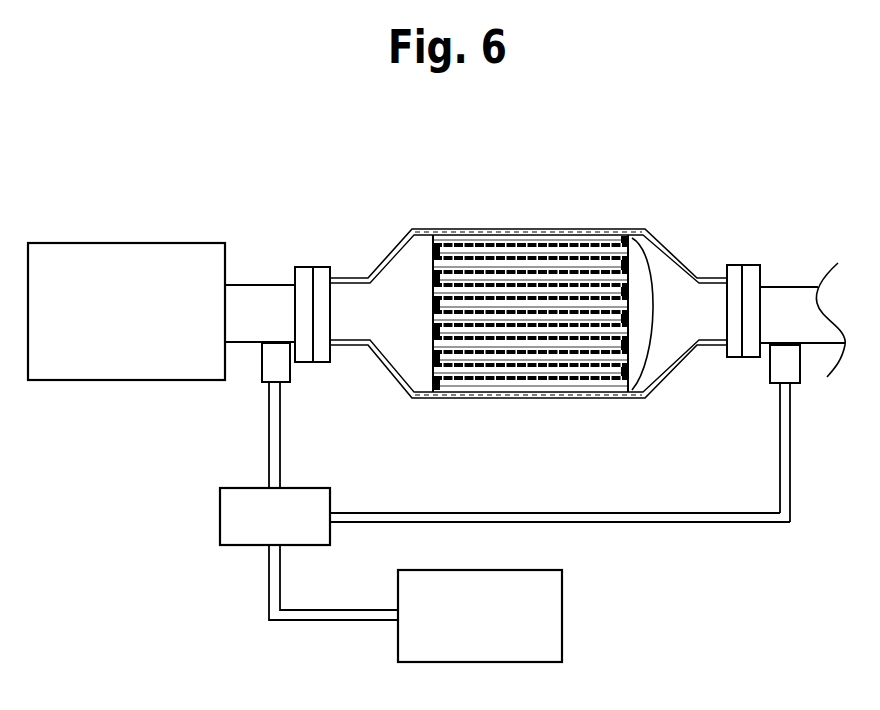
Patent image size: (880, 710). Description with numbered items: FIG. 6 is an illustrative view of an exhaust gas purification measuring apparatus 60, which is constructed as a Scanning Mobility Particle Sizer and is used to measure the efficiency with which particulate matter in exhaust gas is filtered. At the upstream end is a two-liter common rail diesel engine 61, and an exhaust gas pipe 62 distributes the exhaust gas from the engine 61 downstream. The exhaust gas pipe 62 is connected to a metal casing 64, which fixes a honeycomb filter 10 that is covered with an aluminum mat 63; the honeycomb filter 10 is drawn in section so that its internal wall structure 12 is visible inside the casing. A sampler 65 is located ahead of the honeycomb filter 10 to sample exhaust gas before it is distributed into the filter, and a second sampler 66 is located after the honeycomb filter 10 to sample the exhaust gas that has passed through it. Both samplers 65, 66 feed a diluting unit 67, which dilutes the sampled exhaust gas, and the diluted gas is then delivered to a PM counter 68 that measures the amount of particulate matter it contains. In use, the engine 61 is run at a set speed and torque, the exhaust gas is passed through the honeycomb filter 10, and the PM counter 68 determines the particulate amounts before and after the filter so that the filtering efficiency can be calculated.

The honeycomb filter 10 is at (511, 278).
The cell wall (partition wall) of honeycomb filter 12 is at (490, 280).
The exhaust gas purification measuring apparatus 60 is at (522, 152).
The common rail diesel engine 61 is at (180, 243).
The exhaust gas pipe 62 is at (267, 285).
The aluminum mat 63 is at (640, 230).
The metal casing 64 is at (557, 230).
The sampler 65 is at (288, 383).
The sampler 66 is at (770, 385).
The diluting unit 67 is at (288, 488).
The PM counter 68 is at (562, 575).